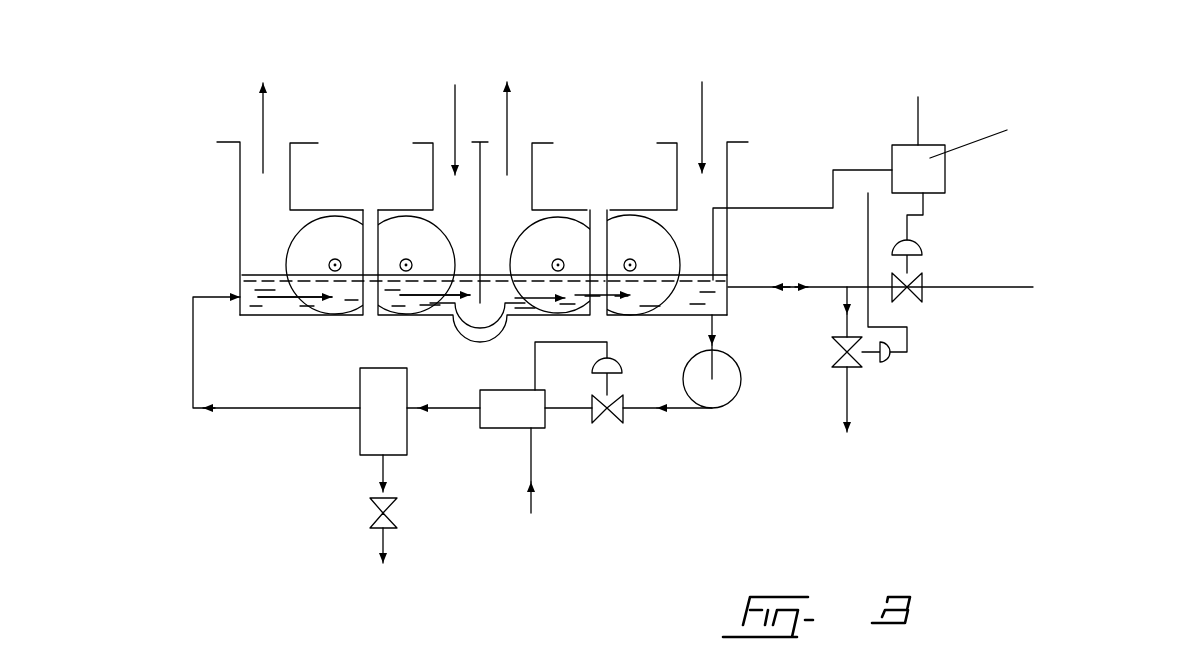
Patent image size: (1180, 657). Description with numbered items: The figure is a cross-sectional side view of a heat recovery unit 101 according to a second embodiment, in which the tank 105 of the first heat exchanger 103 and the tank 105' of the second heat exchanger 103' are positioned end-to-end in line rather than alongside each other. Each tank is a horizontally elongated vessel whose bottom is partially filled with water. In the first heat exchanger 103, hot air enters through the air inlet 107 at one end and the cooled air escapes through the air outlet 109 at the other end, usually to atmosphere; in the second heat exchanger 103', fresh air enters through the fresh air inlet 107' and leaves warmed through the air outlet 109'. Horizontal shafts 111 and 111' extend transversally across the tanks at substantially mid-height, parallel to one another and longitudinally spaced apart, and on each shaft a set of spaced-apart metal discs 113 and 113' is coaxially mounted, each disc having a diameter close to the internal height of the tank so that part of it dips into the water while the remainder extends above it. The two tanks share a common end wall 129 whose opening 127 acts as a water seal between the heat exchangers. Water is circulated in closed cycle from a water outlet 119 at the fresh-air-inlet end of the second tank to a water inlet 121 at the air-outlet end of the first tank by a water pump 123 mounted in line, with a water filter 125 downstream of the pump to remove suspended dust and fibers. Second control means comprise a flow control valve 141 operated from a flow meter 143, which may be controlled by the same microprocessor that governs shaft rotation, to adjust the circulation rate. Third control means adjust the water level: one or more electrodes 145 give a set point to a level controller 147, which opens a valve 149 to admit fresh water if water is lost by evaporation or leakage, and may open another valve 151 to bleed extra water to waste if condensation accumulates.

The heat recovery unit 101 is at (160, 220).
The first heat exchanger 103 is at (361, 162).
The second heat exchanger 103' is at (604, 163).
The tank 105 is at (208, 228).
The tank 105' is at (753, 228).
The air inlet 107 is at (433, 111).
The fresh air inlet 107' is at (716, 110).
The air outlet 109 is at (267, 110).
The air outlet 109' is at (535, 117).
The horizontal shafts 111 is at (370, 234).
The horizontal shafts 111' is at (595, 244).
The metal discs 113 is at (381, 281).
The metal discs 113' is at (651, 232).
The water outlet 119 is at (717, 330).
The water inlet 121 is at (193, 362).
The water pump 123 is at (723, 407).
The water filter 125 is at (355, 438).
The opening 127 is at (468, 330).
The common end wall 129 is at (480, 225).
The flow control valve 141 is at (603, 420).
The flow meter 143 is at (493, 428).
The electrodes 145 is at (713, 263).
The level controller 147 is at (945, 175).
The valve 149 is at (920, 289).
The valve 151 is at (857, 362).